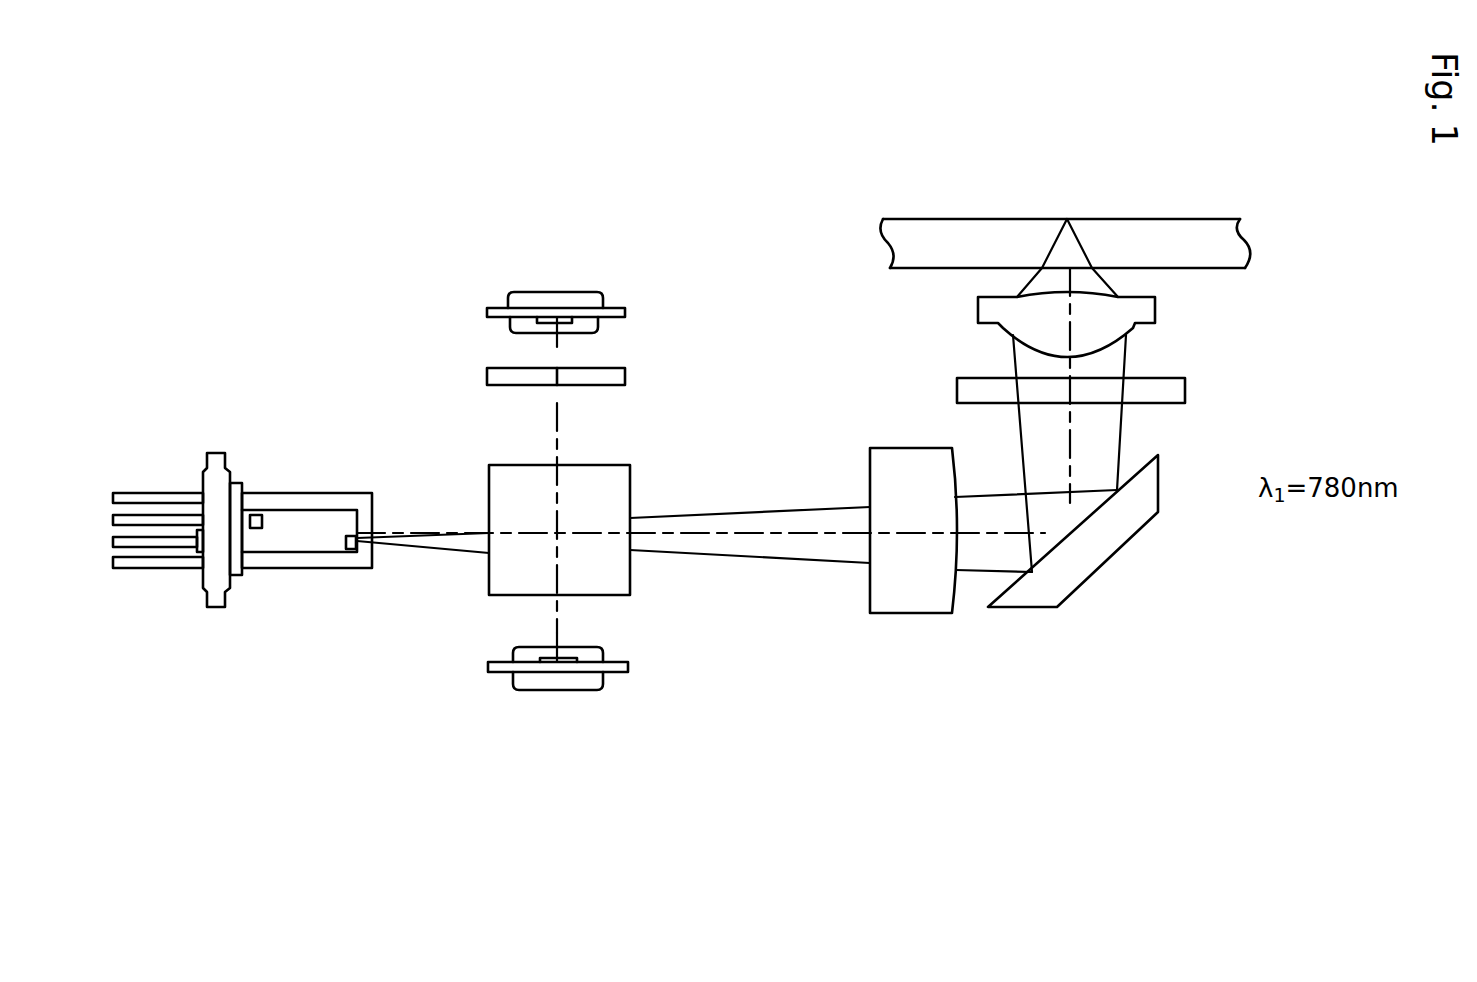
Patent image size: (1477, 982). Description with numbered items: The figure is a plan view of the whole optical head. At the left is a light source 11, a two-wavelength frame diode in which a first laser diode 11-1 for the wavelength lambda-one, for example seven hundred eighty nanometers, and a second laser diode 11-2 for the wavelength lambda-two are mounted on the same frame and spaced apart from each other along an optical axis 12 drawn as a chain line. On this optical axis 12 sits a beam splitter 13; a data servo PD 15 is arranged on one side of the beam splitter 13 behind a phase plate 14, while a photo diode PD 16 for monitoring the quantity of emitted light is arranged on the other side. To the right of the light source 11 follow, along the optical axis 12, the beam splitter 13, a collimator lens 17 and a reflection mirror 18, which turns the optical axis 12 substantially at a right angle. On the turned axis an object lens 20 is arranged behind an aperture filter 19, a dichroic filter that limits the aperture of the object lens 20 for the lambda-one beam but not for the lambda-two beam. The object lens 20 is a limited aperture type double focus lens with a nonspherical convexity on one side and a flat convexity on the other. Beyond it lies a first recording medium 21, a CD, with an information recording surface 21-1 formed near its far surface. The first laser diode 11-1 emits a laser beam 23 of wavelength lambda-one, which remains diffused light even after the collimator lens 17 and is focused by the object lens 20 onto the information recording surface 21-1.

The light source 11 is at (150, 568).
The first laser diode 11-1 is at (348, 550).
The second laser diode 11-2 is at (253, 528).
The optical axis 12 is at (745, 525).
The beam splitter 13 is at (632, 492).
The phase plate 14 is at (602, 385).
The data servo PD 15 is at (602, 325).
The photo diode PD 16 is at (588, 688).
The collimator lens 17 is at (893, 448).
The reflection mirror 18 is at (1103, 548).
The aperture filter 19 is at (1185, 387).
The object lens 20 is at (1155, 310).
The first recording medium 21 is at (1247, 237).
The information recording surface 21-1 is at (1113, 219).
The laser beam 23 is at (442, 530).